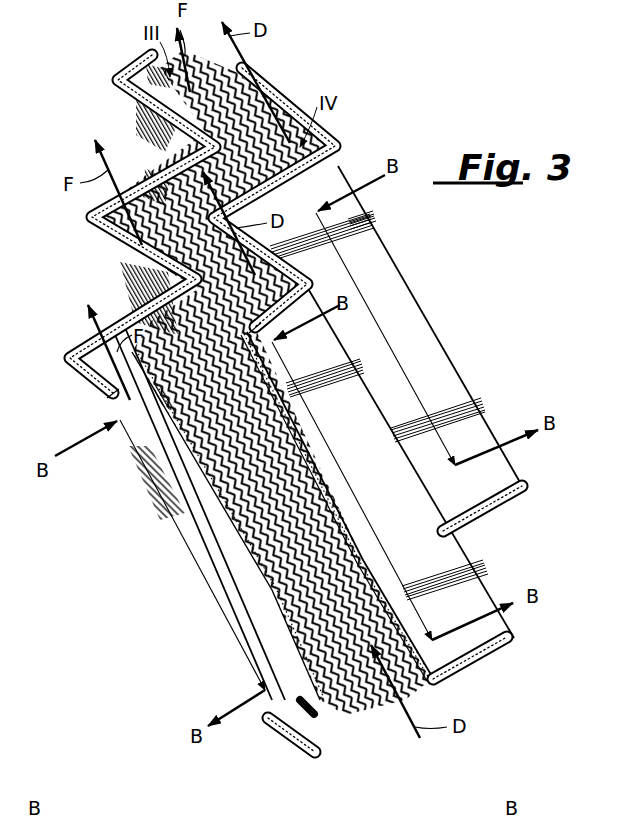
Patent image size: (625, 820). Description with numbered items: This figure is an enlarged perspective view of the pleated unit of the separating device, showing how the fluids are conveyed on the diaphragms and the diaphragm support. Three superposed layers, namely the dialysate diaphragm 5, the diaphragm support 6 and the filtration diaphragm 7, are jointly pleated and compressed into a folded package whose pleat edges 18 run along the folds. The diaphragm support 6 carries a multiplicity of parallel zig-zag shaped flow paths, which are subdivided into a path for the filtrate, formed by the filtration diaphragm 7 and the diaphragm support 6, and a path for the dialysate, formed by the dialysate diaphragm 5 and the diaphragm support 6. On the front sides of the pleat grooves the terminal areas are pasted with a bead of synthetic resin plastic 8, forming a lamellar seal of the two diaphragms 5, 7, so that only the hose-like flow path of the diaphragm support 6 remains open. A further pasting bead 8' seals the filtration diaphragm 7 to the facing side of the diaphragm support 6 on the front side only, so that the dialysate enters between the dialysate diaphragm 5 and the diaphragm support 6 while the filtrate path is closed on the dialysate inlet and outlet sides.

The dialysate diaphragm 5 is at (335, 134).
The diaphragm support 6 is at (212, 82).
The filtration diaphragm 7 is at (157, 125).
The bead of synthetic resin plastic 8 is at (312, 419).
The pasting bead 8' is at (336, 730).
The pleat edges 18 is at (460, 377).